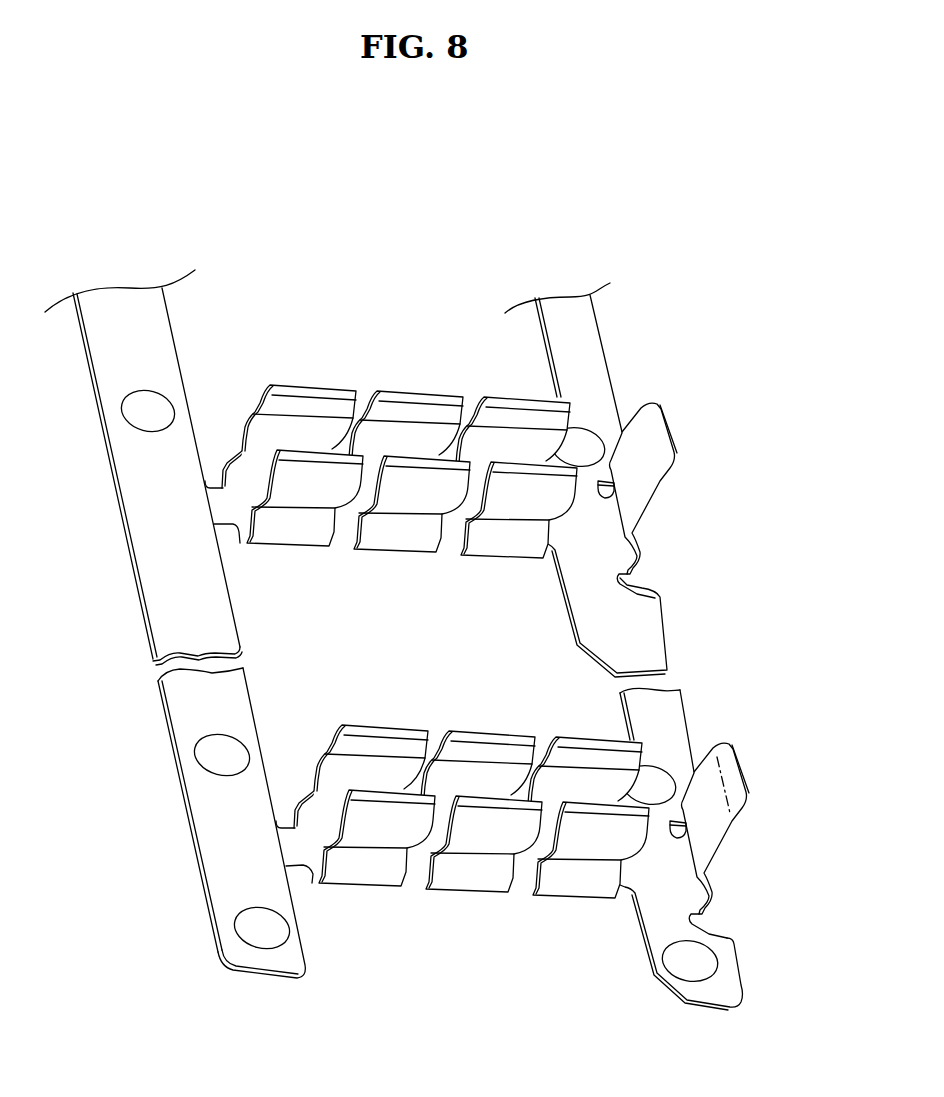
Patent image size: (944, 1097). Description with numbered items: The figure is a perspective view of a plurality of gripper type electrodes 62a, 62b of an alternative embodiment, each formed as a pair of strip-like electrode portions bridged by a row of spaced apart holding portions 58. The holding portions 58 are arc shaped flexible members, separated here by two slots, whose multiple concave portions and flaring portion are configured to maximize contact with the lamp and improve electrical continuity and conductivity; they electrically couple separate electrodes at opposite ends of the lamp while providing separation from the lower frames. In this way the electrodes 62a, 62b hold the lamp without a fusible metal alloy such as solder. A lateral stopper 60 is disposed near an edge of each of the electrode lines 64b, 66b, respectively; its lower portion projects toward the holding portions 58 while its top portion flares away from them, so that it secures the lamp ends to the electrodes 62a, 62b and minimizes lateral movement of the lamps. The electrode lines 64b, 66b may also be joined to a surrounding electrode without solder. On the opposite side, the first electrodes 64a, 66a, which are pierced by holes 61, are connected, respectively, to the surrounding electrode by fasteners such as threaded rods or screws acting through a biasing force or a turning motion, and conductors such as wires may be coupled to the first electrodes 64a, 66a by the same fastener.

The holding portion 58 is at (395, 543).
The lateral stopper 60 is at (657, 442).
The hole 61 is at (137, 410).
The electrode 62a is at (398, 473).
The electrode 62b is at (454, 823).
The first electrode 64a is at (165, 572).
The electrode line 64b is at (652, 637).
The first electrode 66a is at (212, 820).
The electrode line 66b is at (673, 732).